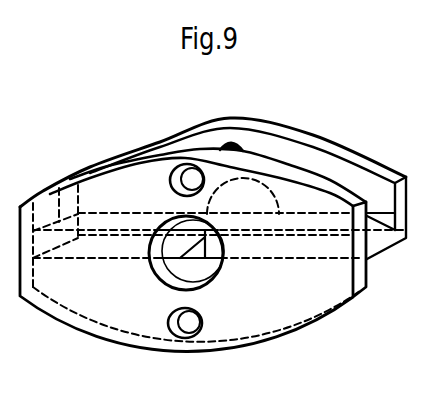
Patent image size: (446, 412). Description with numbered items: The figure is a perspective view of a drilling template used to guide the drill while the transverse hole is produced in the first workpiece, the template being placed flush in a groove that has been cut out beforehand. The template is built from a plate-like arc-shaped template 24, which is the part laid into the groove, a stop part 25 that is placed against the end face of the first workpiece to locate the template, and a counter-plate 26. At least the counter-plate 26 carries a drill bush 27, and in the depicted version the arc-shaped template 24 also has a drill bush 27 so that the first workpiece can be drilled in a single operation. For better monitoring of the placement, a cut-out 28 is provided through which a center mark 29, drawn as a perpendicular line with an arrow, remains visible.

The arc-shaped template 24 is at (325, 133).
The stop part 25 is at (378, 222).
The counter-plate 26 is at (172, 168).
The drill bush 27 is at (132, 143).
The cut-out 28 is at (170, 263).
The center mark 29 is at (166, 267).